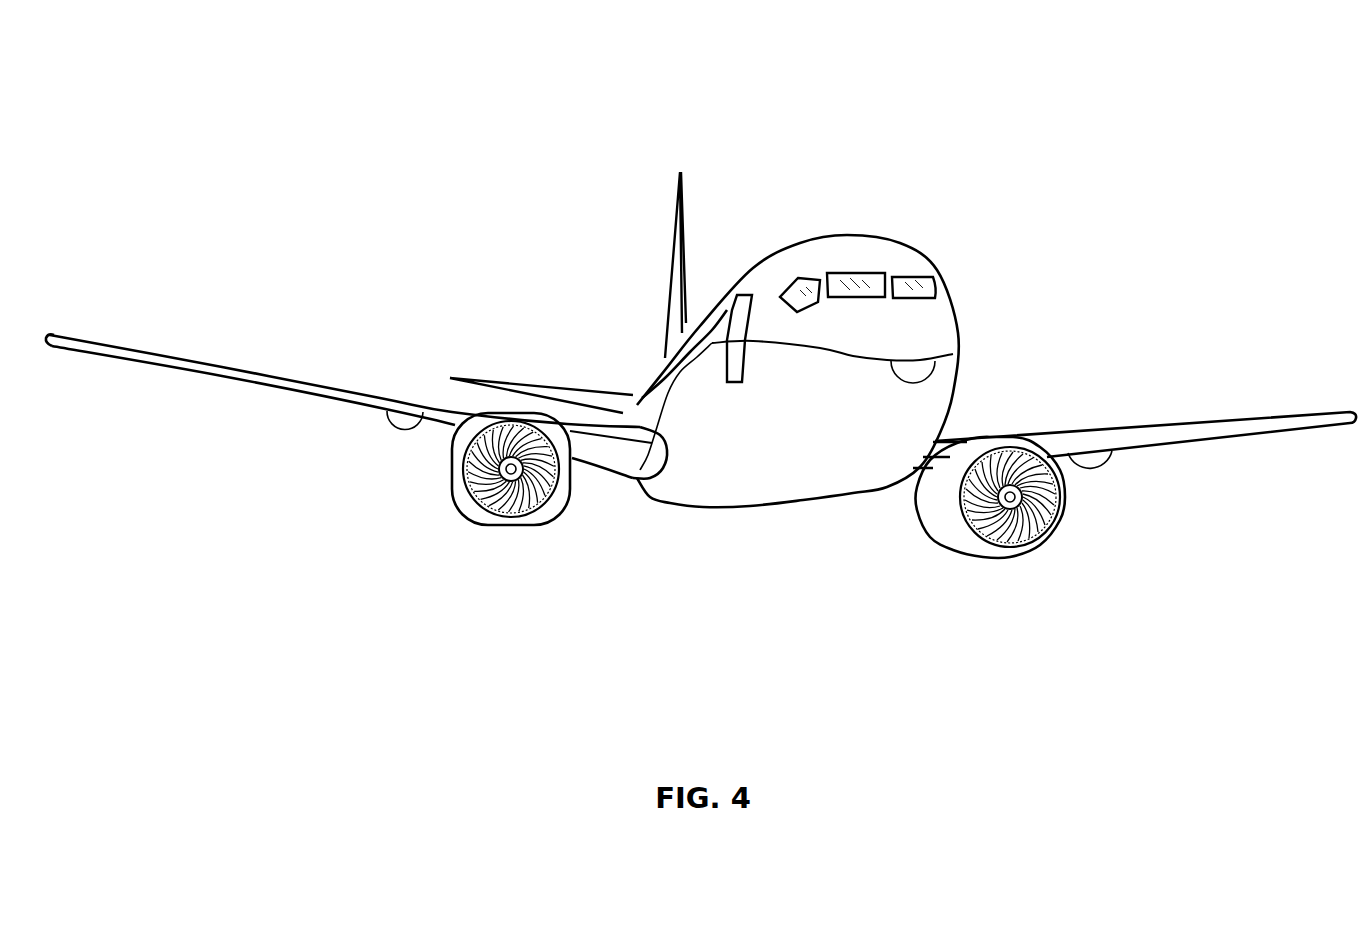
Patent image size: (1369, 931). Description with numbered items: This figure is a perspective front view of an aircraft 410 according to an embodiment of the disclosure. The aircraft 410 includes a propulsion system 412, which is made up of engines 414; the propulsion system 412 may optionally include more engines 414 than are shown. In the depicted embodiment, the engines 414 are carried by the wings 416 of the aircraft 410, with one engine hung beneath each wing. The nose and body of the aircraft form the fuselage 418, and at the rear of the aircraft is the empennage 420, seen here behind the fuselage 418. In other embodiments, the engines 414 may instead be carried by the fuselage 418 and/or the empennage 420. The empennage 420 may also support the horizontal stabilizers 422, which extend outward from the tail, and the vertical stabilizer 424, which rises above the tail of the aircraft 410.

The aircraft 410 is at (372, 98).
The propulsion system 412 is at (378, 536).
The engines 414 is at (505, 528).
The wings 416 is at (222, 368).
The fuselage 418 is at (958, 313).
The empennage 420 is at (663, 357).
The horizontal stabilizers 422 is at (498, 380).
The vertical stabilizer 424 is at (677, 220).